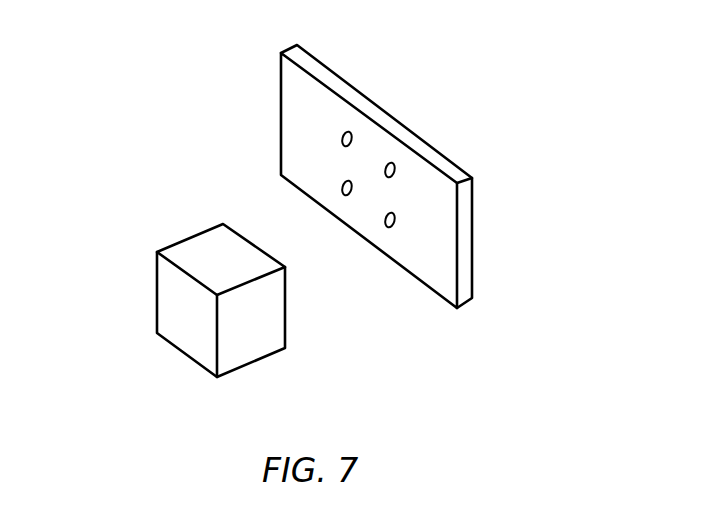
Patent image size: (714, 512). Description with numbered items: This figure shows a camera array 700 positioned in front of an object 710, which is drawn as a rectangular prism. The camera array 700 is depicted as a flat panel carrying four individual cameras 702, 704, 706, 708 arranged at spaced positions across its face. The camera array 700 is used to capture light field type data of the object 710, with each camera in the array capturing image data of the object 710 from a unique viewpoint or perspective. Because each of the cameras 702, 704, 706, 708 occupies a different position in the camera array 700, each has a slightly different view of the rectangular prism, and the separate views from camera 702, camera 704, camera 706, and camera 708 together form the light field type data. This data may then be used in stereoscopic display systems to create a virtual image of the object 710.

The camera array 700 is at (452, 78).
The camera 702 is at (396, 165).
The camera 704 is at (341, 133).
The camera 706 is at (388, 228).
The camera 708 is at (341, 186).
The object 710 is at (175, 293).